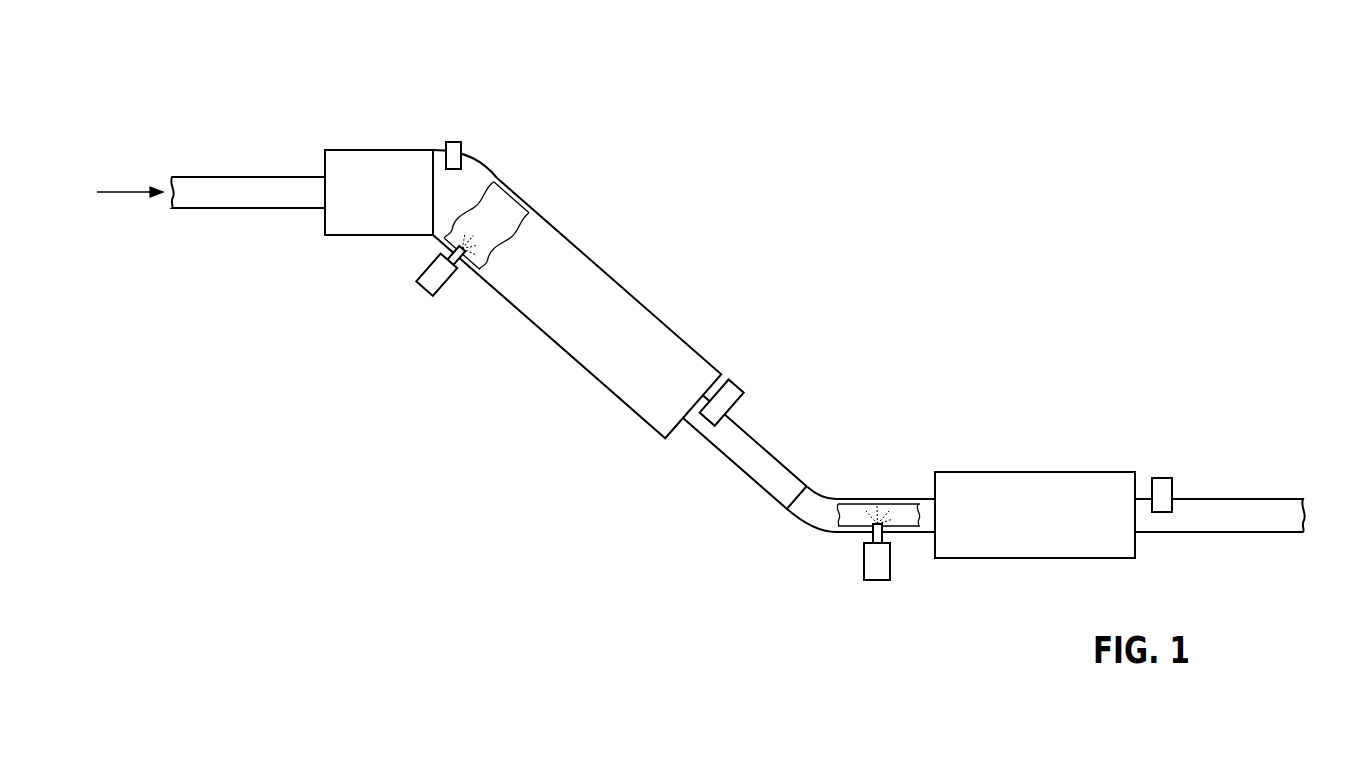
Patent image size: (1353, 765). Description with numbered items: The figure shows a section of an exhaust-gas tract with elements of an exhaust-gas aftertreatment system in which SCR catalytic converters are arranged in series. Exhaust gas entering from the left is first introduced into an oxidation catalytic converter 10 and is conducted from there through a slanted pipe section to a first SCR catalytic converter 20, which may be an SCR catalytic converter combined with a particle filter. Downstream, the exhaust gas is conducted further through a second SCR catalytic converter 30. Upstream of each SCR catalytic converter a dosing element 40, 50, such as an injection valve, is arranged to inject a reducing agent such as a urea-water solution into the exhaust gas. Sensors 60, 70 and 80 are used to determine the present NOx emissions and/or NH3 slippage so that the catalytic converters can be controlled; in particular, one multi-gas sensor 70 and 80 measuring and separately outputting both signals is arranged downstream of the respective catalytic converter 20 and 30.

The oxidation catalytic converter 10 is at (378, 150).
The first SCR catalytic converter 20 is at (627, 288).
The second SCR catalytic converter 30 is at (1033, 472).
The dosing element 40 is at (417, 288).
The dosing element 50 is at (878, 582).
The sensor 60 is at (452, 141).
The multi-gas sensor 70 is at (737, 392).
The multi-gas sensor 80 is at (1160, 478).